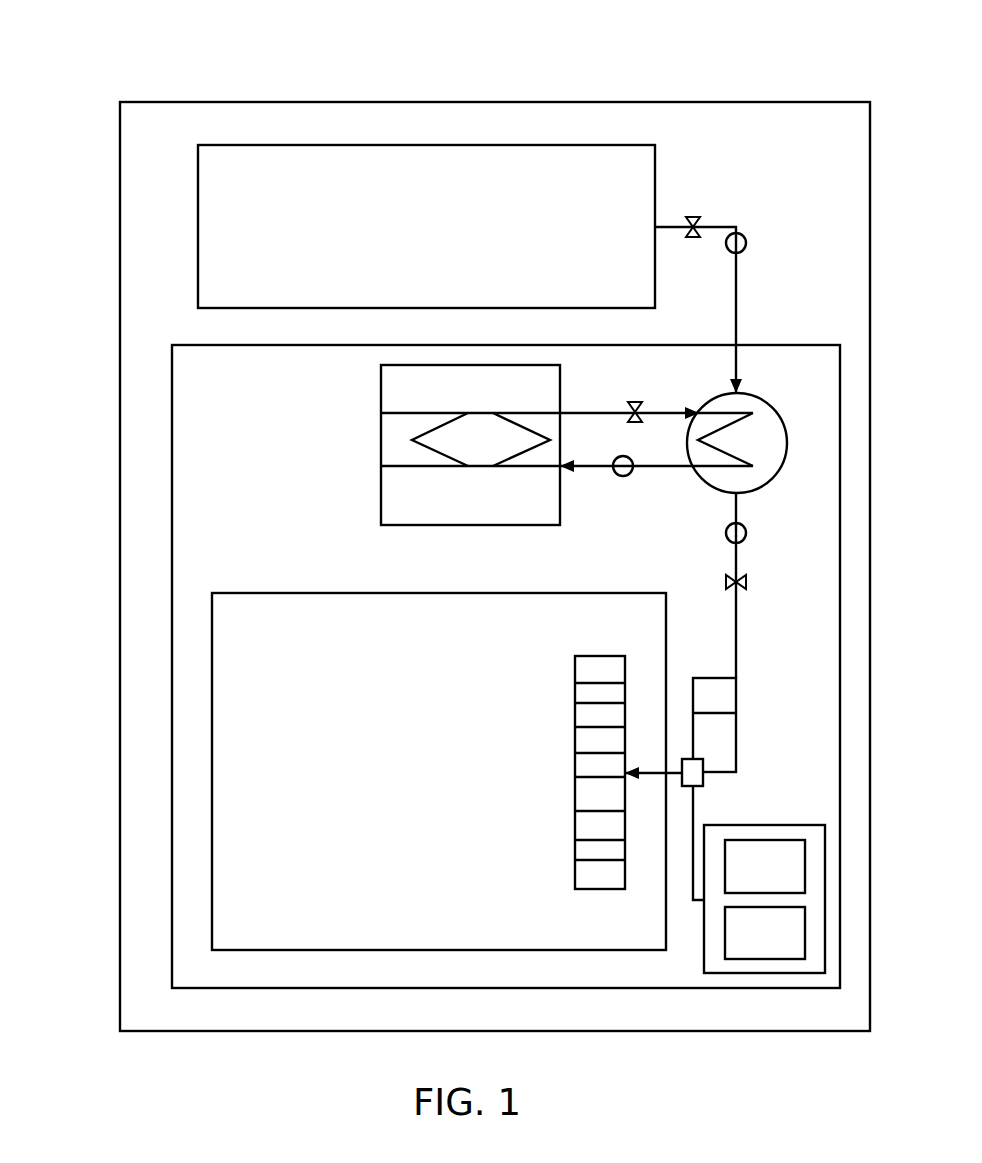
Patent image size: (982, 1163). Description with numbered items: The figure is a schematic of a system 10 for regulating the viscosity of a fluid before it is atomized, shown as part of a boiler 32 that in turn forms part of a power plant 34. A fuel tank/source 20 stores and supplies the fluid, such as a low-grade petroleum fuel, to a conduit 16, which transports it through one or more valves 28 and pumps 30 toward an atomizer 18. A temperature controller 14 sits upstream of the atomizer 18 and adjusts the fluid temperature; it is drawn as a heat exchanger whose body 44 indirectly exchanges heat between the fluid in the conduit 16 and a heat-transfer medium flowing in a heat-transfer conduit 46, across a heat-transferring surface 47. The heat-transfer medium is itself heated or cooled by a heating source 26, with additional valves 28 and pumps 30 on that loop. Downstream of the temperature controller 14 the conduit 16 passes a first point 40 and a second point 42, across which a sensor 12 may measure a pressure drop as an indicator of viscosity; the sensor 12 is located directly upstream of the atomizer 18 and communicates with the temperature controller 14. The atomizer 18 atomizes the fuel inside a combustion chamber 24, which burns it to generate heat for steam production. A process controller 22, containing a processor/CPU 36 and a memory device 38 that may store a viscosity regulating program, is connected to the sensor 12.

The system 10 is at (138, 52).
The sensor 12 is at (704, 782).
The temperature controller 14 is at (776, 412).
The conduit 16 is at (736, 227).
The atomizer 18 is at (575, 712).
The fuel tank/source 20 is at (198, 205).
The process controller 22 is at (790, 825).
The combustion chamber 24 is at (300, 593).
The heating source 26 is at (381, 480).
The valve 28 is at (693, 216).
The pump 30 is at (746, 243).
The boiler 32 is at (178, 345).
The power plant 34 is at (348, 102).
The processor/CPU 36 is at (765, 866).
The memory device 38 is at (765, 933).
The first point 40 is at (720, 678).
The second point 42 is at (737, 713).
The body 44 is at (762, 425).
The heat-transfer conduit 46 is at (573, 414).
The heat-transferring surface 47 is at (724, 440).